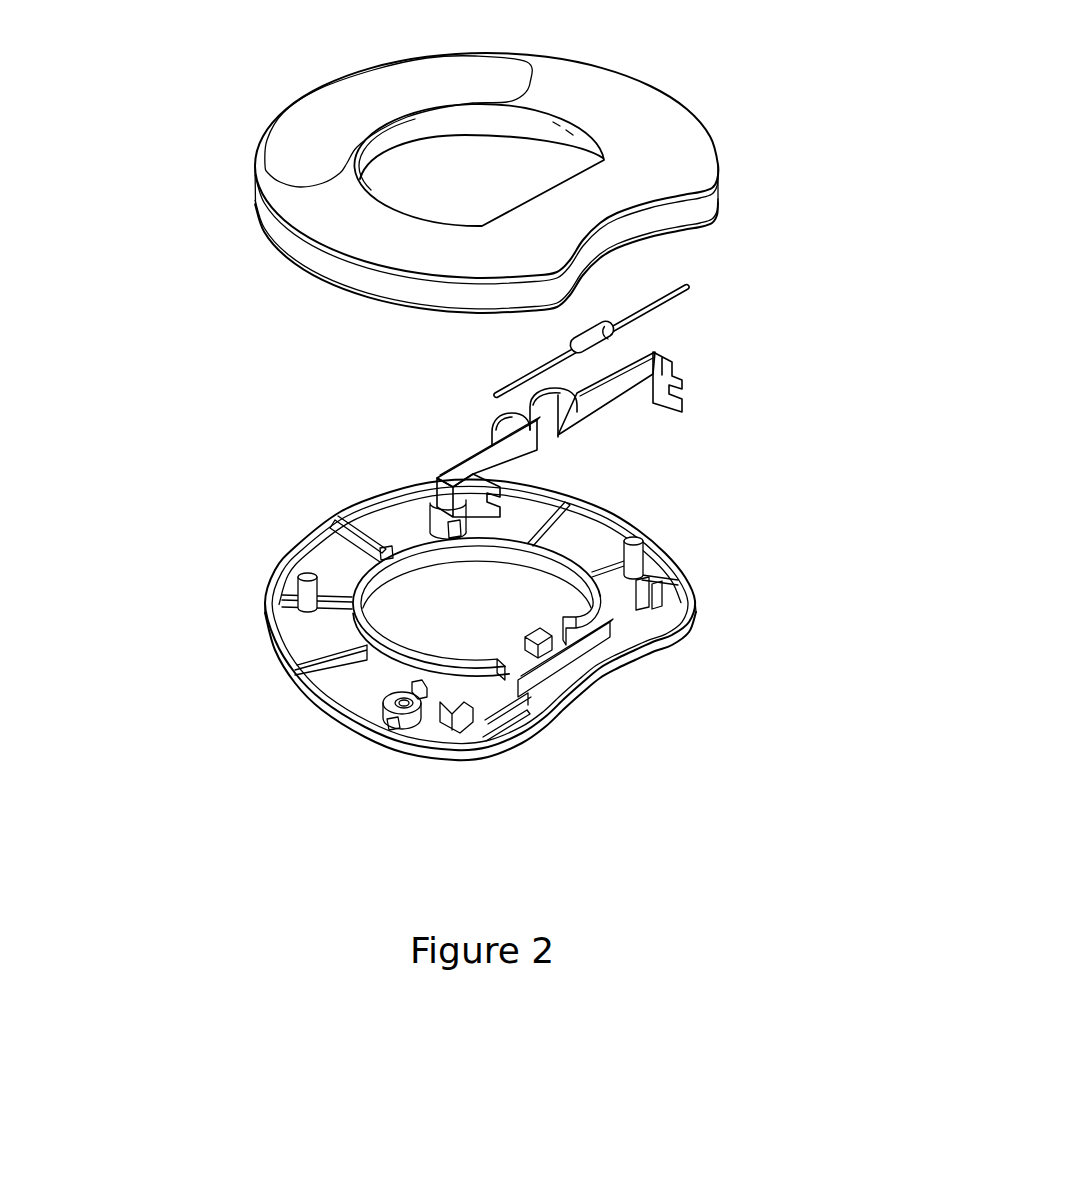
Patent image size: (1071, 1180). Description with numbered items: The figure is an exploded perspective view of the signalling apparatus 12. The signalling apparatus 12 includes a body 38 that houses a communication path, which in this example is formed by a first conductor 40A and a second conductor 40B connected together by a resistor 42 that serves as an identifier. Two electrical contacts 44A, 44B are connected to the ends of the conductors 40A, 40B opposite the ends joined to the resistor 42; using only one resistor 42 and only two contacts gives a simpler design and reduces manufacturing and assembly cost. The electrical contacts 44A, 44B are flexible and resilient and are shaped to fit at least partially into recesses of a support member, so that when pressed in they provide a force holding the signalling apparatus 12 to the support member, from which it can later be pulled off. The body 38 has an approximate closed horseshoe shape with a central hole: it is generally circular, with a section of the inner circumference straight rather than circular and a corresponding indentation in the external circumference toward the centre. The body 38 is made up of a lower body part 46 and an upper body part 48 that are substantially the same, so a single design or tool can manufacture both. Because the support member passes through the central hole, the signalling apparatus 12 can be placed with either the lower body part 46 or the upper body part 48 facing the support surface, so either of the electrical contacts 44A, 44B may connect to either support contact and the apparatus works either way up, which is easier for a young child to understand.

The signalling apparatus 12 is at (640, 767).
The body 38 is at (302, 215).
The first conductor 40A is at (485, 465).
The second conductor 40B is at (610, 397).
The resistor 42 is at (607, 340).
The electrical contact 44A is at (566, 402).
The electrical contact 44B is at (510, 418).
The lower body part 46 is at (518, 745).
The upper body part 48 is at (640, 102).